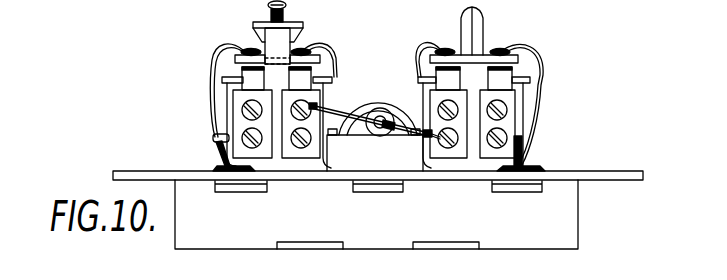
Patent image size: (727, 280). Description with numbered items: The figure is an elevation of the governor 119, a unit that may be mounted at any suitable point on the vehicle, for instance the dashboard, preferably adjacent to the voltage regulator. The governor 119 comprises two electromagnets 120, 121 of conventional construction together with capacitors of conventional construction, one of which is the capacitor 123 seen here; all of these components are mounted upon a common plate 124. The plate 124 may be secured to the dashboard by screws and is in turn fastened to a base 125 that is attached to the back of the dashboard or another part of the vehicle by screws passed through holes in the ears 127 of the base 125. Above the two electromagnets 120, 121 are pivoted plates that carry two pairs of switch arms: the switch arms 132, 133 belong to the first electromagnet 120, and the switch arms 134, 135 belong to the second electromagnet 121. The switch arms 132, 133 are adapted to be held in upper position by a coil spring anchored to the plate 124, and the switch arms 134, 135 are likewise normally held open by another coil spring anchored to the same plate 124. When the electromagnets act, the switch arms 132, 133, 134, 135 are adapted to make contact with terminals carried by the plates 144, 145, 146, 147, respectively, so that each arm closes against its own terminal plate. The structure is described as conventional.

The governor 119 is at (222, 127).
The electromagnet 120 is at (377, 75).
The electromagnet 121 is at (420, 80).
The capacitor 123 is at (350, 88).
The plate 124 is at (595, 176).
The base 125 is at (558, 222).
The ears 127 is at (425, 245).
The switch arm 132 is at (243, 50).
The switch arm 133 is at (303, 50).
The switch arm 134 is at (448, 52).
The switch arm 135 is at (496, 50).
The plate 144 is at (223, 80).
The plate 145 is at (324, 76).
The plate 146 is at (428, 66).
The plate 147 is at (528, 88).